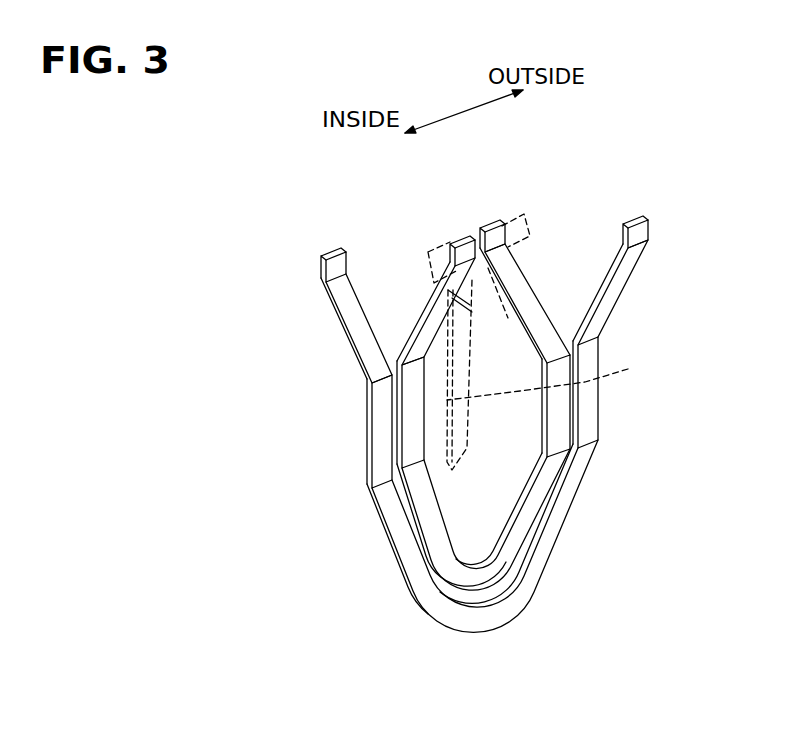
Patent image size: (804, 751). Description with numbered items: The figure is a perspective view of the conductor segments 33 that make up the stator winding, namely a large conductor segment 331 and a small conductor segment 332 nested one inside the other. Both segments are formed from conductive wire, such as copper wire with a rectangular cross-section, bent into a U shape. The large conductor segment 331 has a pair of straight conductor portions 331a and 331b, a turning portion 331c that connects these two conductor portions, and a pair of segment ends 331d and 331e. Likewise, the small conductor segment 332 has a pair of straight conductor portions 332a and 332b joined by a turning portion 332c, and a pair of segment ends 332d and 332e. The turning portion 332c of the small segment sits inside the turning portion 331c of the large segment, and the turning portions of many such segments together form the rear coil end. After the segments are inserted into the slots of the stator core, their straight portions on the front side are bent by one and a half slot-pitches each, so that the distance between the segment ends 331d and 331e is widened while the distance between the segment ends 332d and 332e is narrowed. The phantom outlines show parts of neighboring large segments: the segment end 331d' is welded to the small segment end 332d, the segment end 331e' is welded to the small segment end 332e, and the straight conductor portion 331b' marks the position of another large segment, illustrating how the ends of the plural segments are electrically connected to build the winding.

The conductor segments 33 is at (402, 597).
The large conductor segment 331 is at (613, 306).
The straight conductor portion 331a is at (380, 412).
The straight conductor portion 331b is at (629, 392).
The straight conductor portion 331b' is at (571, 379).
The turning portion 331c is at (457, 615).
The segment end 331d is at (292, 268).
The segment end 331d' is at (422, 338).
The segment end 331e is at (682, 234).
The segment end 331e' is at (539, 239).
The small conductor segment 332 is at (551, 318).
The straight conductor portion 332a is at (412, 430).
The straight conductor portion 332b is at (553, 437).
The turning portion 332c is at (475, 580).
The segment end 332d is at (462, 234).
The segment end 332e is at (503, 223).